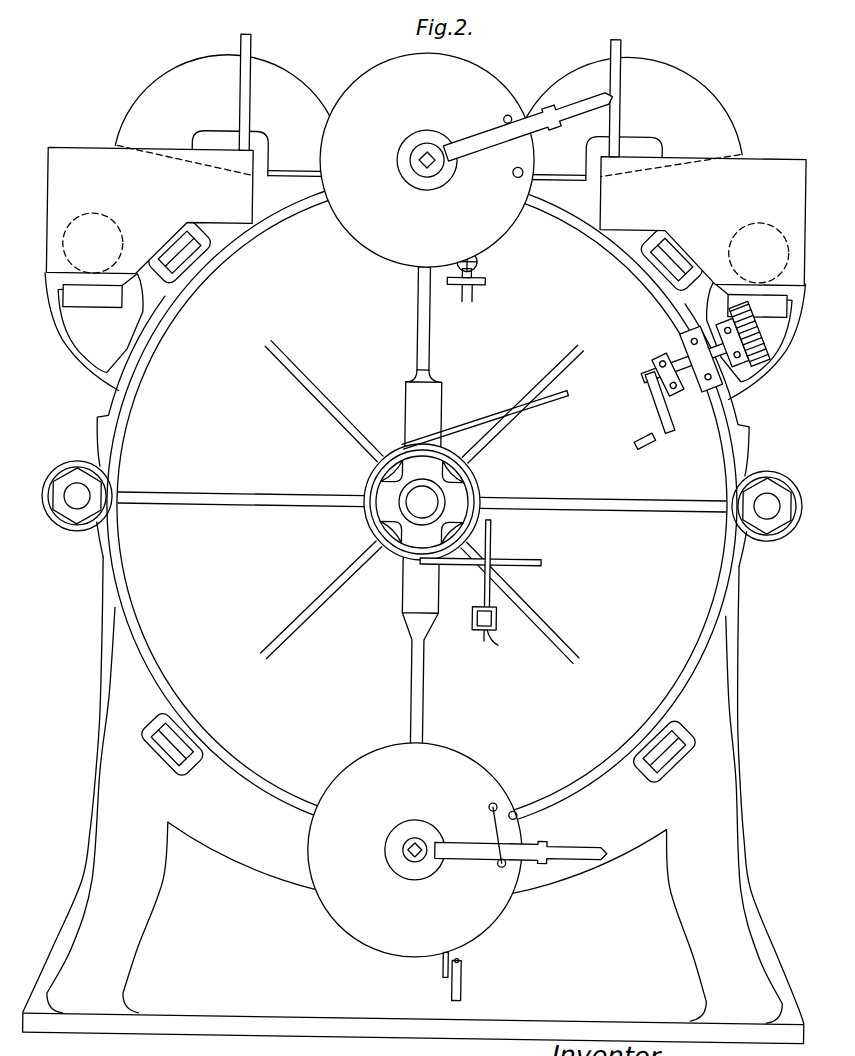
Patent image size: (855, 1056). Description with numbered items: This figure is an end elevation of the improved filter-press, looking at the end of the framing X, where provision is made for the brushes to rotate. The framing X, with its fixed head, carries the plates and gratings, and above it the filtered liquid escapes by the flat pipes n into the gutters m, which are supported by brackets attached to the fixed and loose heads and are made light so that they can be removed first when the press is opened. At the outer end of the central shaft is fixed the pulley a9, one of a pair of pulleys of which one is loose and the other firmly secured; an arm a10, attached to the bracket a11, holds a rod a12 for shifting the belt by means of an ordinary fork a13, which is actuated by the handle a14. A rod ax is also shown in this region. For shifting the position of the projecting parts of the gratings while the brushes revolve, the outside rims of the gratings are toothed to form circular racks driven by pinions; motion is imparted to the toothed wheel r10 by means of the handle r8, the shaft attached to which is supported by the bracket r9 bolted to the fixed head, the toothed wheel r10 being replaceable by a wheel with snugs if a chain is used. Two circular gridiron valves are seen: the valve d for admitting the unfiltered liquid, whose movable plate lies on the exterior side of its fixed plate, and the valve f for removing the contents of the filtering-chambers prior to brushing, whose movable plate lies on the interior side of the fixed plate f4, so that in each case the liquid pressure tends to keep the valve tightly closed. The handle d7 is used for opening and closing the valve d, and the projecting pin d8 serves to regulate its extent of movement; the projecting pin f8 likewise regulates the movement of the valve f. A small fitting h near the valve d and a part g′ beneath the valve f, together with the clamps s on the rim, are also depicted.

The framing x is at (422, 504).
The clamps s is at (422, 499).
The flat pipes n is at (429, 125).
The gutters m is at (427, 158).
The handle r8 is at (645, 432).
The bracket r9 is at (668, 352).
The toothed wheel r10 is at (767, 350).
The bracket a11 is at (429, 422).
The pulley a9 is at (479, 490).
The connecting rods ax is at (497, 441).
The fork a13 is at (491, 589).
The arm a10 is at (499, 610).
The rod a12 is at (498, 620).
The handle a14 is at (500, 644).
The valve h is at (477, 264).
The valve d is at (465, 160).
The handle d7 is at (480, 141).
The projecting pin d8 is at (507, 171).
The valve f is at (457, 850).
The fixed plate f4 is at (465, 846).
The projecting pin f8 is at (516, 818).
The latch g′ is at (479, 997).